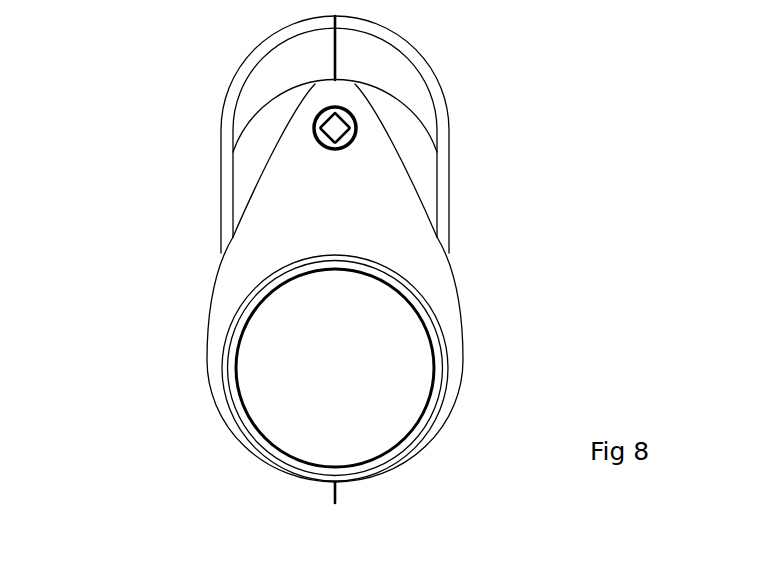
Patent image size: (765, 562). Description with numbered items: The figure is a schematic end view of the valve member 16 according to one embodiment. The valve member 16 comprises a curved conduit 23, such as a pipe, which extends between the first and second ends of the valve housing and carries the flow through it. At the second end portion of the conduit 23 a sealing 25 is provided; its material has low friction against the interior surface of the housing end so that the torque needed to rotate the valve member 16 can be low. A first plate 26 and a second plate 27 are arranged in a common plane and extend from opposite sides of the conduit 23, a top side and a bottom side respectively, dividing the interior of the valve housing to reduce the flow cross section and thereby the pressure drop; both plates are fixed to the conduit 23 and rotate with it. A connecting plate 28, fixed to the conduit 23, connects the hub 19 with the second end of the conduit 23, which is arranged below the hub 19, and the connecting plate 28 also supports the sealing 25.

The valve member 16 is at (465, 85).
The hub 19 is at (318, 117).
The curved conduit 23 is at (420, 157).
The sealing 25 is at (445, 345).
The first plate 26 is at (333, 50).
The second plate 27 is at (337, 493).
The connecting plate 28 is at (237, 267).